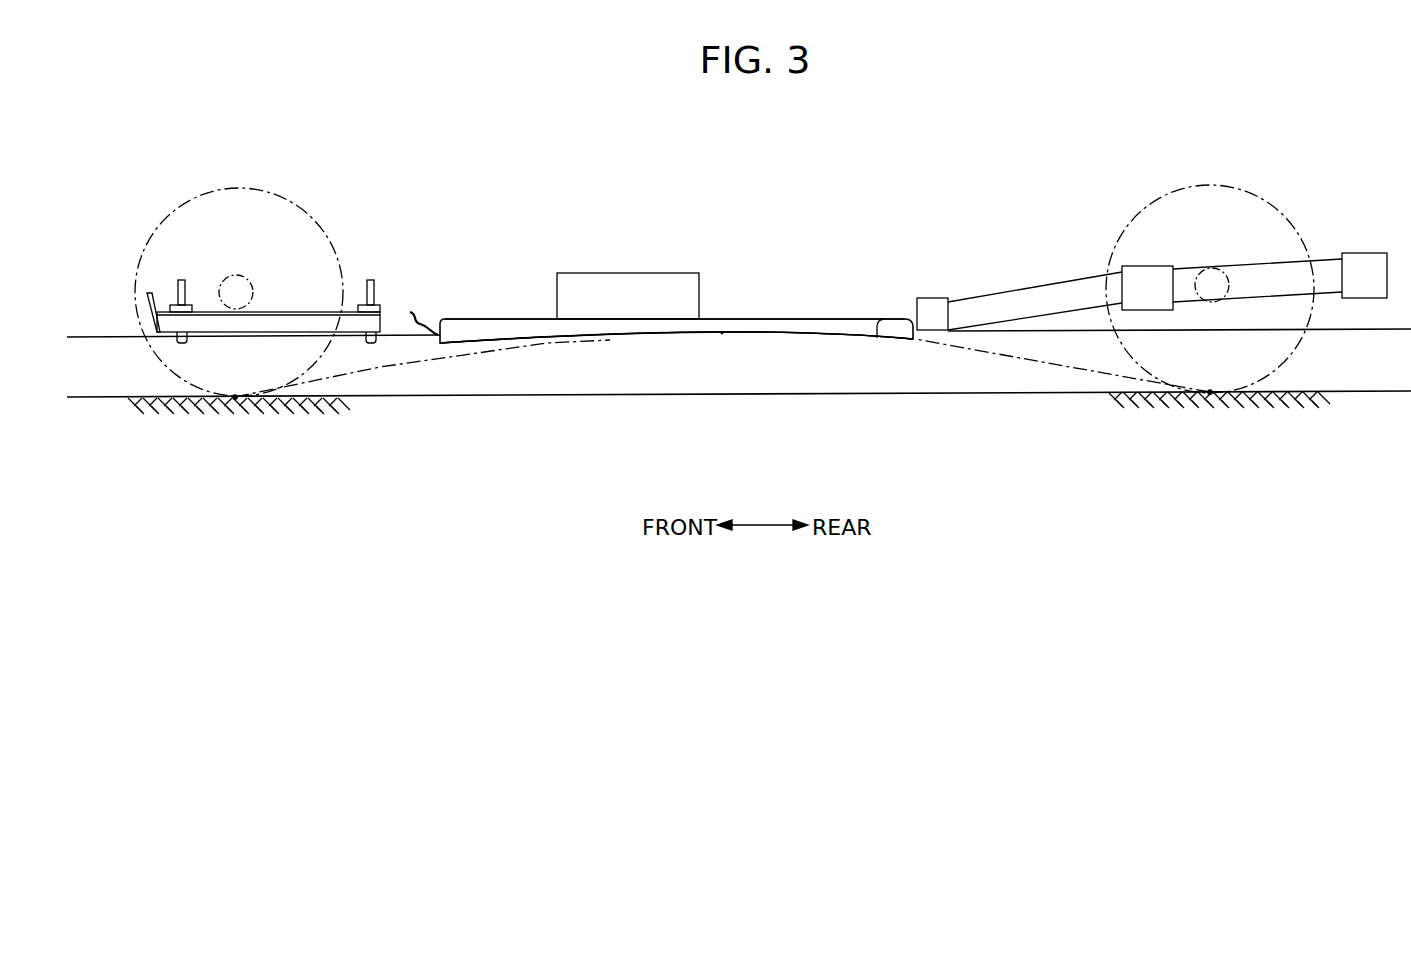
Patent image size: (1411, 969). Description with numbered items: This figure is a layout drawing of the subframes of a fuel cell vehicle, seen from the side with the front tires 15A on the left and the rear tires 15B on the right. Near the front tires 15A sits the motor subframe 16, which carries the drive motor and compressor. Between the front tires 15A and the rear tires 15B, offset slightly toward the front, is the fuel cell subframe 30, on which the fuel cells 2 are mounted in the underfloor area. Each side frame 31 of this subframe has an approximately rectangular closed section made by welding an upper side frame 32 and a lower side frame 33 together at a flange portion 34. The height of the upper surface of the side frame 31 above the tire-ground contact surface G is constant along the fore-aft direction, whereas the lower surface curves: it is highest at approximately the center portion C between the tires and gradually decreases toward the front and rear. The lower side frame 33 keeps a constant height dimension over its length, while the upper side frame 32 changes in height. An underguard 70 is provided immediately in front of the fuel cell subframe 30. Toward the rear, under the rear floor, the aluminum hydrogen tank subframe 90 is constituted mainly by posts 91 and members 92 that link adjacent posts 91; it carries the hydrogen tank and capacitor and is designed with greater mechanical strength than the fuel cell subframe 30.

The fuel cell 2 is at (632, 273).
The front tire 15A is at (228, 188).
The rear tire 15B is at (1208, 186).
The motor subframe 16 is at (352, 311).
The fuel cell subframe 30 is at (797, 319).
The side frame 31 is at (748, 319).
The upper side frame 32 is at (847, 319).
The lower side frame 33 is at (830, 337).
The flange portion 34 is at (880, 324).
The underguard 70 is at (410, 312).
The hydrogen tank subframe 90 is at (1157, 253).
The post 91 is at (935, 298).
The member 92 is at (1005, 292).
The center portion C is at (725, 334).
The tire-ground contact surface G is at (235, 400).